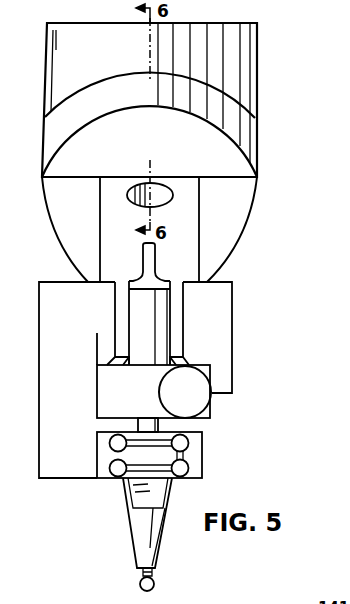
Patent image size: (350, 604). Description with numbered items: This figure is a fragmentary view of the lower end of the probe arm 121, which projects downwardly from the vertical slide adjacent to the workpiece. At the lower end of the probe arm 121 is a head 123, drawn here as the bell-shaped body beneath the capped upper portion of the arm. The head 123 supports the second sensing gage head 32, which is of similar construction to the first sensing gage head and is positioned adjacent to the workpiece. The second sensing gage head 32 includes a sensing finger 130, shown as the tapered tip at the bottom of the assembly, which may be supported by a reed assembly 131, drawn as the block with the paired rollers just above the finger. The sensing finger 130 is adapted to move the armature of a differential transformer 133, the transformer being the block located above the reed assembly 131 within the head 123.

The probe arm 121 is at (237, 72).
The head 123 is at (232, 217).
The differential transformer 133 is at (145, 340).
The second sensing gage head 32 is at (180, 449).
The reed assembly 131 is at (211, 449).
The sensing finger 130 is at (143, 583).